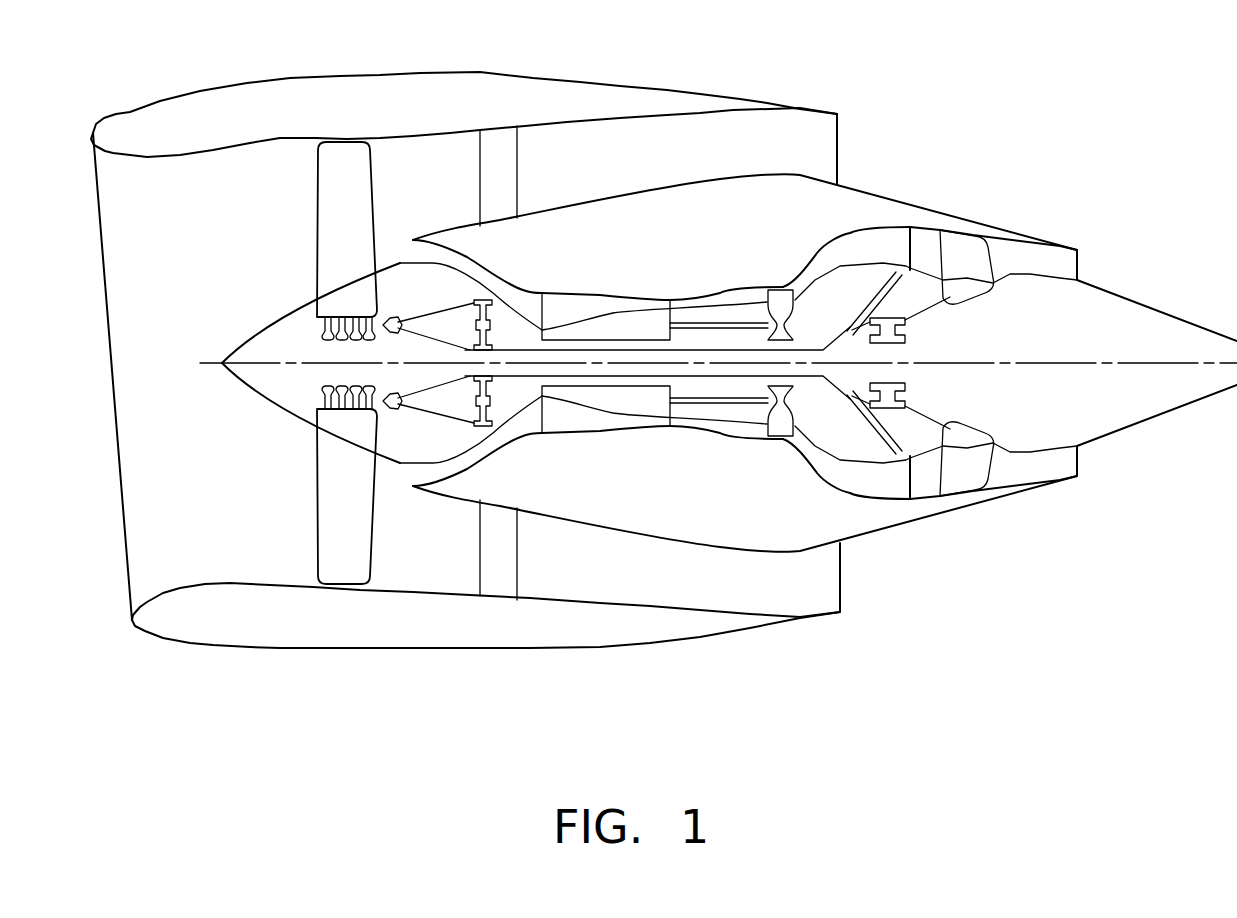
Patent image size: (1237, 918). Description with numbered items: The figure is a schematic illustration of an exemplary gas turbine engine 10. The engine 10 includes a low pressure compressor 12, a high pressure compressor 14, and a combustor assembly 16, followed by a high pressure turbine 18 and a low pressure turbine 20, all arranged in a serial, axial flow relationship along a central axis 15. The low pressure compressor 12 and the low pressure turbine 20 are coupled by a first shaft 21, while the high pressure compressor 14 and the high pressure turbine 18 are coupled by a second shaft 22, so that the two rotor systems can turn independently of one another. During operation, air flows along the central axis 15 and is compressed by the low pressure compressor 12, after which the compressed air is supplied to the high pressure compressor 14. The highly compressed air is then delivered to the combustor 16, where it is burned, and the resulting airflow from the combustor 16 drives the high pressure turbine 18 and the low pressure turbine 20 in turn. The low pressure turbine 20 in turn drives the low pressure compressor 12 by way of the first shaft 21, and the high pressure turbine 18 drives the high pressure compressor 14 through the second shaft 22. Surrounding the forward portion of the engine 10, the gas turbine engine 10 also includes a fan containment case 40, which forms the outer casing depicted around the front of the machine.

The gas turbine engine 10 is at (664, 328).
The low pressure compressor 12 is at (332, 505).
The high pressure compressor 14 is at (562, 307).
The central axis 15 is at (1010, 363).
The combustor assembly 16 is at (737, 303).
The high pressure turbine 18 is at (771, 449).
The low pressure turbine 20 is at (870, 247).
The first shaft 21 is at (587, 378).
The second shaft 22 is at (700, 327).
The fan containment case 40 is at (348, 98).